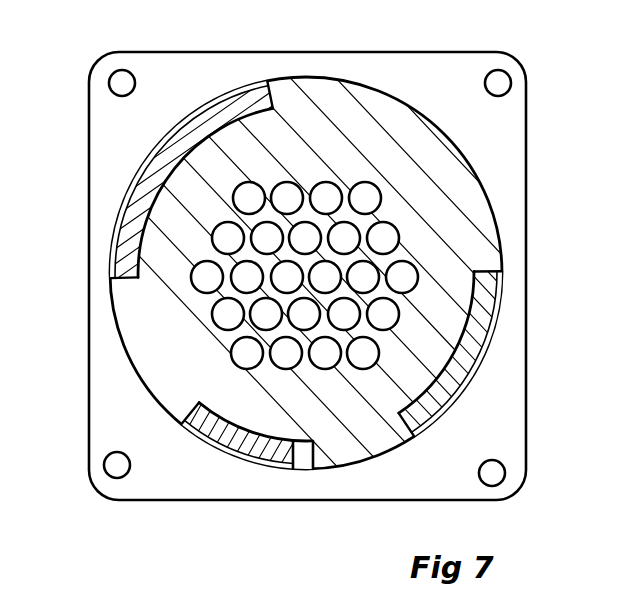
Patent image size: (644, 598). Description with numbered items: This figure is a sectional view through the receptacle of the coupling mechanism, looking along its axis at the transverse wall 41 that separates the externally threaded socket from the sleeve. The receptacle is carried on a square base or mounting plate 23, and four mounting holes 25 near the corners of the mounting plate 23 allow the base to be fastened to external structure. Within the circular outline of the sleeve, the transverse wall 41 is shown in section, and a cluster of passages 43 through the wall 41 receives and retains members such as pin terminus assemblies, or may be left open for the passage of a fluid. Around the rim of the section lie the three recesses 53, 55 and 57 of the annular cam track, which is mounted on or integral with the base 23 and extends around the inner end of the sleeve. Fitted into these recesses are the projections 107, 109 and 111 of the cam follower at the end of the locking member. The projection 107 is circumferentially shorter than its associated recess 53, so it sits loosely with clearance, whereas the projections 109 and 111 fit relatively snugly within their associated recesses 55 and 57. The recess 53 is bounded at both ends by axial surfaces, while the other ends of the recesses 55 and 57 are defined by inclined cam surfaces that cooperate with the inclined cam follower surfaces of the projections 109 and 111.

The mounting plate 23 is at (195, 62).
The mounting holes 25 is at (115, 83).
The transverse wall 41 is at (338, 93).
The passages 43 is at (371, 199).
The recess 53 is at (305, 460).
The recess 55 is at (465, 340).
The recess 57 is at (155, 190).
The projection 107 is at (255, 453).
The projection 109 is at (467, 355).
The projection 111 is at (169, 150).